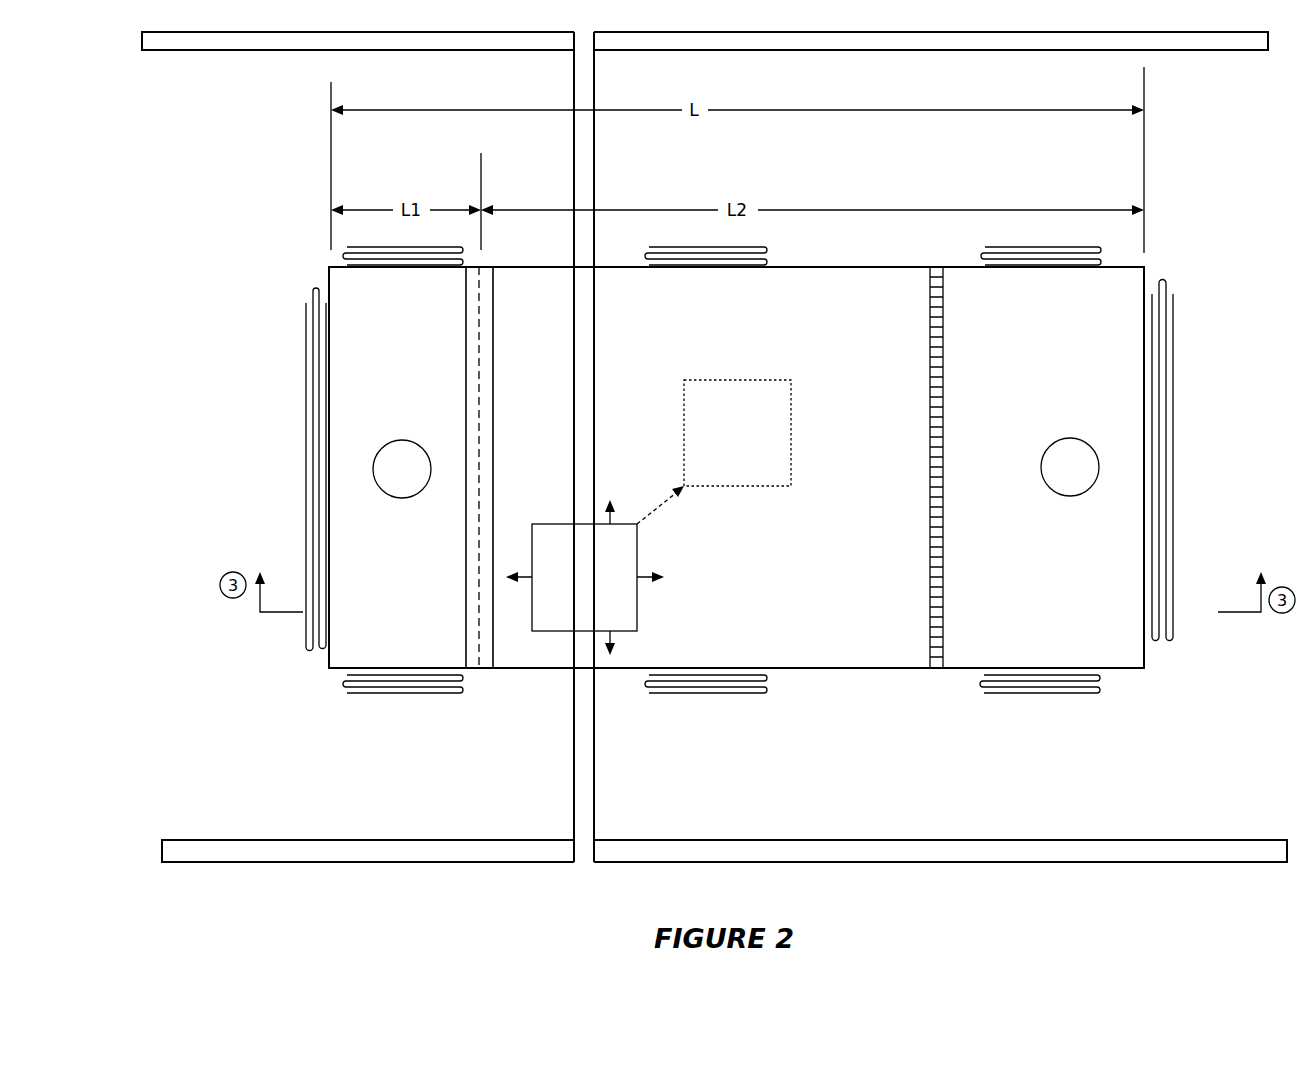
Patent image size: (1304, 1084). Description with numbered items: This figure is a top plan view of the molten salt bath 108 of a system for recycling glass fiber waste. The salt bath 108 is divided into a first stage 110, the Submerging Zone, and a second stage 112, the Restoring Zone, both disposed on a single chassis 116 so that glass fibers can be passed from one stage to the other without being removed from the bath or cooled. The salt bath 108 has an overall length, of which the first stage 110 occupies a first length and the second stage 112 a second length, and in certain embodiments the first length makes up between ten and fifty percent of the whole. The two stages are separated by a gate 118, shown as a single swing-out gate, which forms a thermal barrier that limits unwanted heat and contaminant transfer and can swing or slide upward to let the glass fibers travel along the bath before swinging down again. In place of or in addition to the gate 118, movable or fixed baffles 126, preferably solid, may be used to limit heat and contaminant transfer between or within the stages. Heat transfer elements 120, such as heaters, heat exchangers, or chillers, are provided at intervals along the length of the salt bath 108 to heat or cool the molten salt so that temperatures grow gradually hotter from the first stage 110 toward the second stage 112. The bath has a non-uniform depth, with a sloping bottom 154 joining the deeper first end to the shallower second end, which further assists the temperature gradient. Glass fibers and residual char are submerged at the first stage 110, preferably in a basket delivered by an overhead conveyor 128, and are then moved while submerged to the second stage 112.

The salt bath 108 is at (1183, 199).
The first stage 110 is at (388, 636).
The second stage 112 is at (822, 636).
The chassis 116 is at (1150, 678).
The gate 118 is at (493, 375).
The heat transfer elements 120 is at (343, 255).
The baffles 126 is at (945, 505).
The overhead conveyor 128 is at (793, 437).
The sloping bottom 154 is at (722, 632).